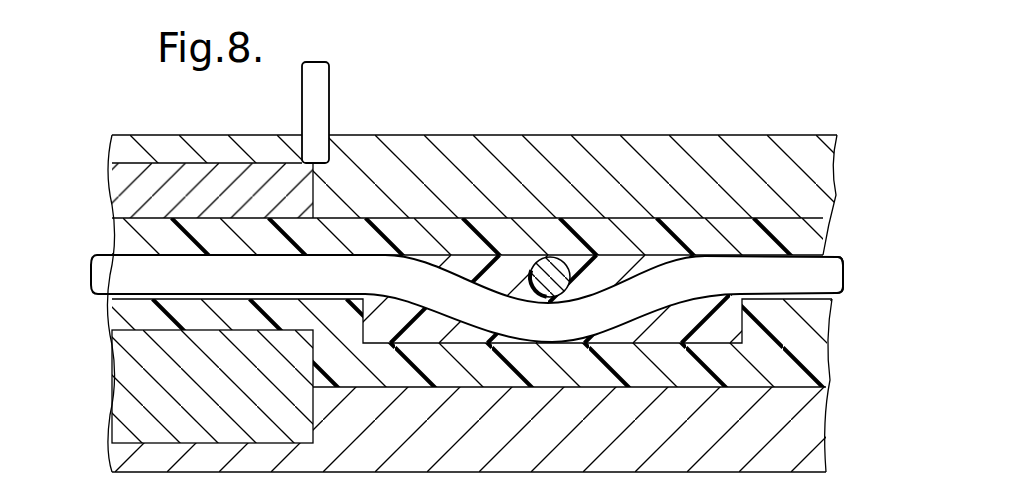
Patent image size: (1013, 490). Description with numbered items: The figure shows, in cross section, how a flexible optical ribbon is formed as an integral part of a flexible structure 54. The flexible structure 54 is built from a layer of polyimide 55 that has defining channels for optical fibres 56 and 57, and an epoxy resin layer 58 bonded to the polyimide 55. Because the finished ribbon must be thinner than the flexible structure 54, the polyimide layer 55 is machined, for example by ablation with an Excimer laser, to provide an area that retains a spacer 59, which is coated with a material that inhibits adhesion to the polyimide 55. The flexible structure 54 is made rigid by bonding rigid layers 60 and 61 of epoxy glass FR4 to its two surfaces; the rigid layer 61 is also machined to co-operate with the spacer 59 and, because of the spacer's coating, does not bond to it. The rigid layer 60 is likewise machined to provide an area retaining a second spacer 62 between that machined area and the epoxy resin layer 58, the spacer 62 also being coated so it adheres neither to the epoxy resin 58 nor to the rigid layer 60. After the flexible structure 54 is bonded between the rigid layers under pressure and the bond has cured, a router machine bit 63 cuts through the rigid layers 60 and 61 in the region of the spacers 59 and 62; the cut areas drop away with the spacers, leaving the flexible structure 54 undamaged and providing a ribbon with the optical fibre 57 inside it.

The flexible structure 54 is at (840, 312).
The polyimide layer 55 is at (780, 352).
The optical fibre 56 is at (549, 264).
The optical fibre 57 is at (462, 285).
The epoxy resin layer 58 is at (800, 239).
The spacer 59 is at (130, 390).
The rigid layer 60 is at (727, 168).
The rigid layer 61 is at (790, 437).
The spacer 62 is at (196, 173).
The router machine bit 63 is at (317, 108).